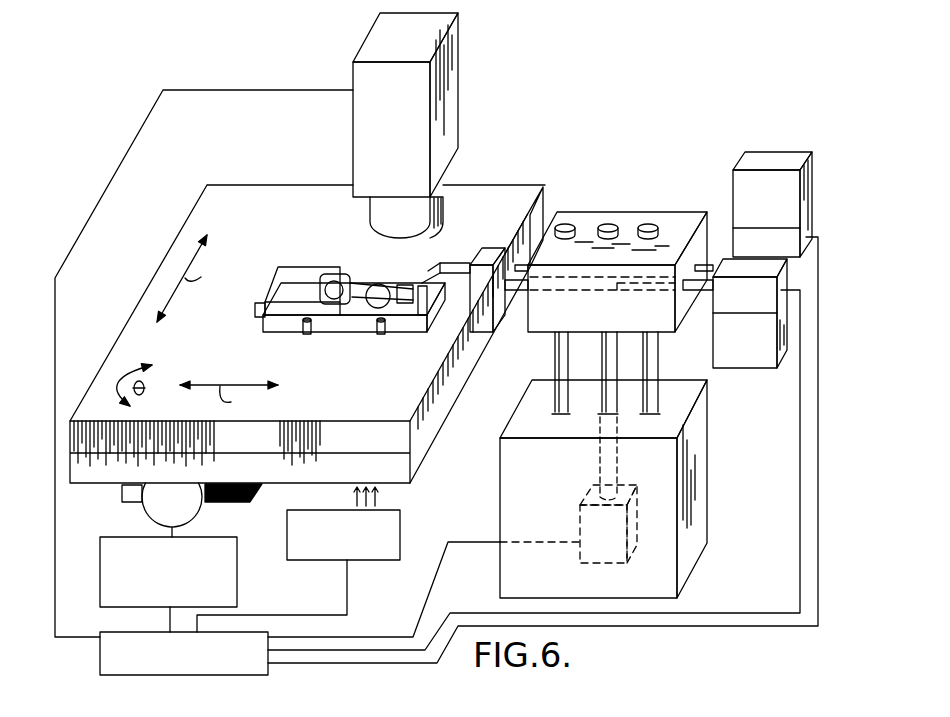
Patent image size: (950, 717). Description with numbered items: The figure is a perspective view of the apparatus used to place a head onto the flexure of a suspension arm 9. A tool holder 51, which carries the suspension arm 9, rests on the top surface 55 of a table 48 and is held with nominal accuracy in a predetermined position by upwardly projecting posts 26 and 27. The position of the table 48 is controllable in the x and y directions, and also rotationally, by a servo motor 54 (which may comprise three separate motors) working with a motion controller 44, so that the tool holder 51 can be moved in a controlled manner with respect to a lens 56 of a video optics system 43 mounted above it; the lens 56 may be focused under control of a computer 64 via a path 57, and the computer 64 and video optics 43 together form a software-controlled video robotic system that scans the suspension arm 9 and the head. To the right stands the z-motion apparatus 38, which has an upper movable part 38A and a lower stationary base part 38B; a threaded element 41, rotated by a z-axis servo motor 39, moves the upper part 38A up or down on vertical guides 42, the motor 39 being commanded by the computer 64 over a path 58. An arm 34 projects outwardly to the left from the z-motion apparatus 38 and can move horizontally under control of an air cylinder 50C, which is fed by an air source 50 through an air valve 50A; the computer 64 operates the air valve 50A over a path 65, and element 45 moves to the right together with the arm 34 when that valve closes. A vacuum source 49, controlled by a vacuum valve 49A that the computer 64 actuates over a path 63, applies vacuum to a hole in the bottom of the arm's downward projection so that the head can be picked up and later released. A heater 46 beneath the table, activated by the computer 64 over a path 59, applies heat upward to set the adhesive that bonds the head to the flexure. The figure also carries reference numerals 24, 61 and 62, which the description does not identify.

The suspension arm 9 is at (362, 285).
The clamp 24 is at (356, 273).
The upwardly projecting post 26 is at (323, 306).
The upwardly projecting post 27 is at (380, 334).
The arm 34 is at (458, 255).
The z-motion apparatus 38 is at (625, 372).
The upper movable part 38A is at (636, 326).
The lower stationary base part 38B is at (567, 475).
The z axis servo motor 39 is at (580, 549).
The threaded element 41 is at (608, 226).
The vertical guides 42 is at (565, 226).
The video optics system 43 is at (410, 180).
The motion controller 44 is at (117, 537).
The element 45 is at (507, 223).
The heater 46 is at (403, 513).
The table 48 is at (307, 334).
The vacuum source 49 is at (749, 182).
The vacuum valve 49A is at (733, 243).
The air source 50 is at (725, 334).
The air valve 50A is at (713, 302).
The air cylinder 50C is at (577, 289).
The tool holder 51 is at (415, 323).
The servo motor 54 is at (160, 507).
The top surface 55 is at (258, 250).
The lens element 56 is at (370, 214).
The path 57 is at (258, 90).
The path 58 is at (465, 542).
The path 59 is at (348, 593).
The drive shaft 61 is at (177, 532).
The connection line 62 is at (170, 617).
The path 63 is at (818, 540).
The computer 64 is at (100, 663).
The path 65 is at (800, 468).